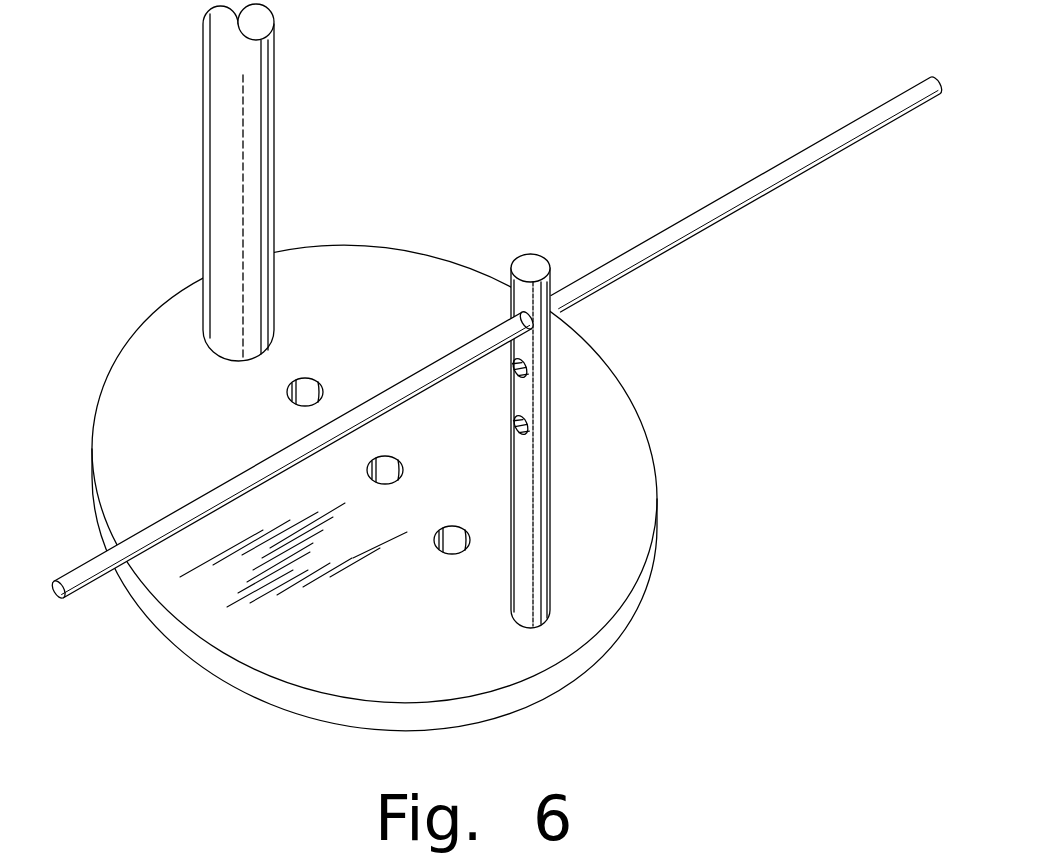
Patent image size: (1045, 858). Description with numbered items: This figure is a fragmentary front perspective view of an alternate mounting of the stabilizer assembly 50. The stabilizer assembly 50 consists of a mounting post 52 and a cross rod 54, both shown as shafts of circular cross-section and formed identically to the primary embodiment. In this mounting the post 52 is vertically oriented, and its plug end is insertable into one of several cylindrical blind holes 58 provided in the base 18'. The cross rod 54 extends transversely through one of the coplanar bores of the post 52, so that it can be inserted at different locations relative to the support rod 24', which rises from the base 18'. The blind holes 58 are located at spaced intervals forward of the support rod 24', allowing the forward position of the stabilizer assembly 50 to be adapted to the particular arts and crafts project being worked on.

The base 18' is at (374, 474).
The support rod 24' is at (212, 182).
The stabilizer assembly 50 is at (561, 241).
The mounting post 52 is at (535, 508).
The cross rod 54 is at (655, 247).
The blind holes 58 is at (310, 390).